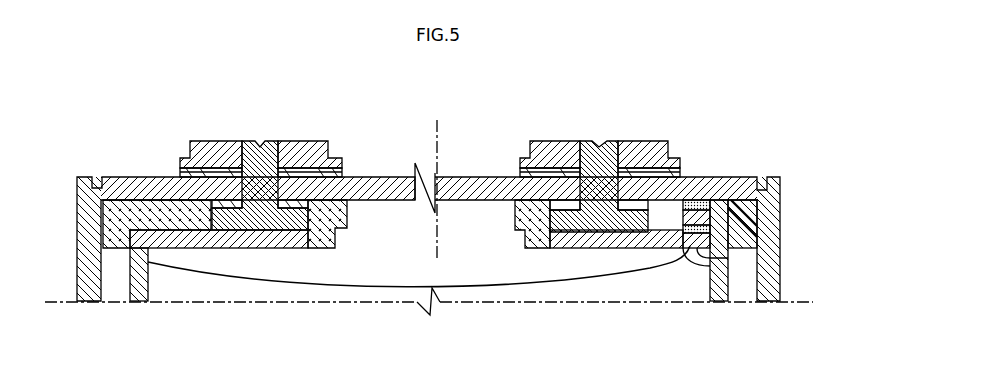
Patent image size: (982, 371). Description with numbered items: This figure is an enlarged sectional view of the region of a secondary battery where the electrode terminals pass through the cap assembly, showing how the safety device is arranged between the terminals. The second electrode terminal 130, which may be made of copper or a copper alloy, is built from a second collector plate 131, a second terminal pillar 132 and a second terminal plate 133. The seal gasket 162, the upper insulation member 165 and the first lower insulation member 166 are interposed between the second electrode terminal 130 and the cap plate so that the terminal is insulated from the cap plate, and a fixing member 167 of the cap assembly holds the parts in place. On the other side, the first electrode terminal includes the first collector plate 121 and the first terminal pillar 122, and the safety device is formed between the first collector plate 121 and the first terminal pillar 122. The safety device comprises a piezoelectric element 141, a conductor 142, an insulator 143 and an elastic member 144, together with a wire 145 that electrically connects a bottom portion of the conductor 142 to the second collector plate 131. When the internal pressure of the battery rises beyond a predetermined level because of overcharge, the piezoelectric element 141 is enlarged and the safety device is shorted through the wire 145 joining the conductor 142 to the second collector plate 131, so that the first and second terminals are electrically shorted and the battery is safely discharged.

The first collector plate 121 is at (728, 287).
The first terminal pillar 122 is at (592, 150).
The second electrode terminal 130 is at (261, 145).
The second collector plate 131 is at (220, 215).
The second terminal pillar 132 is at (252, 150).
The second terminal plate 133 is at (309, 129).
The piezoelectric element 141 is at (750, 195).
The conductor 142 is at (717, 203).
The insulator 143 is at (693, 203).
The elastic member 144 is at (712, 175).
The wire 145 is at (500, 285).
The seal gasket 162 is at (307, 200).
The upper insulation member 165 is at (335, 172).
The first lower insulation member 166 is at (132, 208).
The fixing member 167 is at (727, 260).